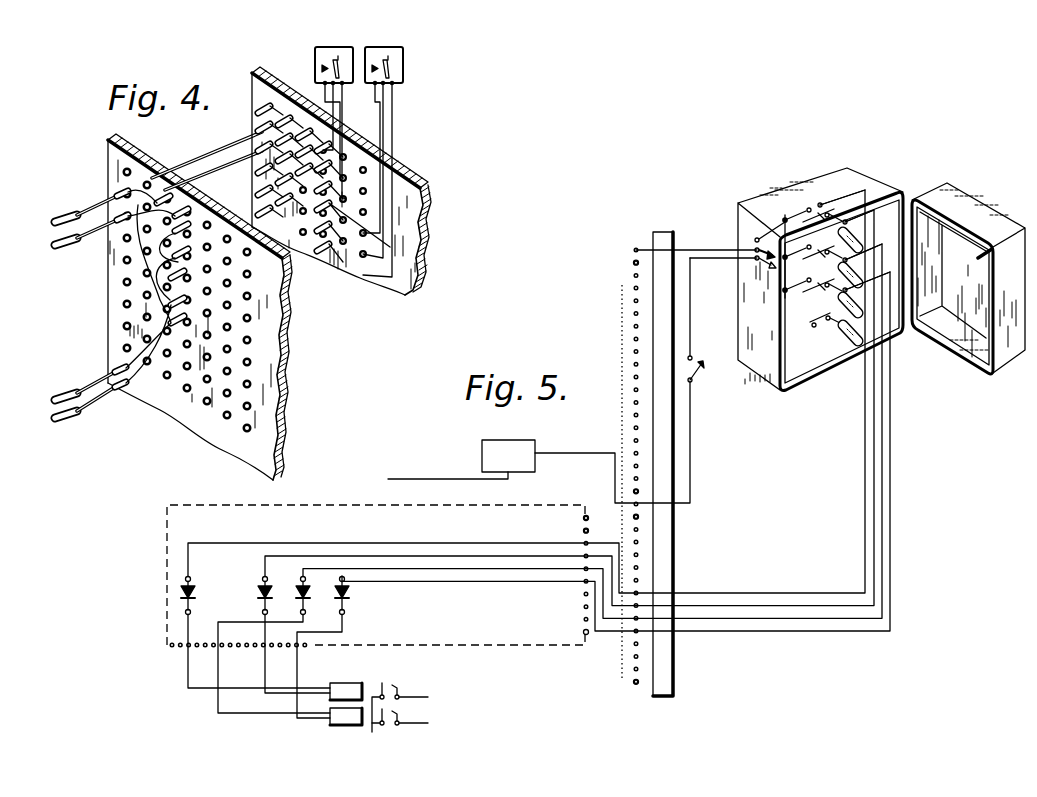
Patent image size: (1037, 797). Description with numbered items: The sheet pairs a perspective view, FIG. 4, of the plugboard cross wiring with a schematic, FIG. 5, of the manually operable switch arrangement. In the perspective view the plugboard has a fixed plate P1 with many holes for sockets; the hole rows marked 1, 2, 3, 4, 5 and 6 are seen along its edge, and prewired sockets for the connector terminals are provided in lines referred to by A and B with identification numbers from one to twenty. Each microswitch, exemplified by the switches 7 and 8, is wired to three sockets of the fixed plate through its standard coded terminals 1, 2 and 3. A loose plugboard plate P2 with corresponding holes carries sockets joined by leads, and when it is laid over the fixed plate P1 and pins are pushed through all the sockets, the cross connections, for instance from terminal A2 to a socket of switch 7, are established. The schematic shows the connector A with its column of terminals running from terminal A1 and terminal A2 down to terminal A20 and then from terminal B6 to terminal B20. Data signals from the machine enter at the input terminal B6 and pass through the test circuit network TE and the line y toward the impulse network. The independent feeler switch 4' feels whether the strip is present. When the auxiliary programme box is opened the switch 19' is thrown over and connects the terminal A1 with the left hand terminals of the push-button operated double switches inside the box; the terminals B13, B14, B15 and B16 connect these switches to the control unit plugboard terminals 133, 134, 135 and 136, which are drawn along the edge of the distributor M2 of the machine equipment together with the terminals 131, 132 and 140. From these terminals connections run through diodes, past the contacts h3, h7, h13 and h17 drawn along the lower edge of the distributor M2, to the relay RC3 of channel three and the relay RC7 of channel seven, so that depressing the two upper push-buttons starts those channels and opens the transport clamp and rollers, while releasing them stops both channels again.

In FIG. 4, the fixed plugboard plate P1 is at (415, 208).
In FIG. 4, the loose plugboard plate P2 is at (282, 346).
In FIG. 4, the standard coded terminal 1 is at (268, 103).
In FIG. 5, the standard coded terminal 1 is at (755, 249).
In FIG. 4, the standard coded terminal 2 is at (268, 123).
In FIG. 5, the standard coded terminal 2 is at (755, 259).
In FIG. 4, the standard coded terminal 3 is at (268, 143).
In FIG. 5, the standard coded terminal 3 is at (756, 238).
In FIG. 4, the socket identification number 4 is at (268, 165).
In FIG. 4, the socket identification number 5 is at (268, 187).
In FIG. 4, the socket identification number 6 is at (268, 207).
In FIG. 4, the microswitch 7 is at (334, 115).
In FIG. 4, the microswitch 8 is at (383, 154).
In FIG. 5, the socket line A is at (674, 673).
In FIG. 5, the terminal A'1 A1 is at (684, 251).
In FIG. 5, the terminal A2 is at (625, 268).
In FIG. 5, the terminal A20 is at (623, 493).
In FIG. 5, the input terminal B6 is at (625, 518).
In FIG. 5, the terminal B'13 B13 is at (750, 392).
In FIG. 5, the terminal B'14 B14 is at (755, 409).
In FIG. 5, the terminal B'15 B15 is at (759, 433).
In FIG. 5, the terminal B'16 B16 is at (763, 453).
In FIG. 5, the terminal B'20 B20 is at (623, 682).
In FIG. 5, the independent feeler switch 4' is at (625, 380).
In FIG. 5, the programme box switch 19' is at (761, 263).
In FIG. 5, the test circuit network TE is at (508, 456).
In FIG. 5, the line y is at (424, 472).
In FIG. 5, the distributor of the machine equipment M2 is at (376, 575).
In FIG. 5, the terminal 131 is at (598, 519).
In FIG. 5, the terminal 132 is at (598, 531).
In FIG. 5, the control unit plugboard terminal 133 is at (412, 565).
In FIG. 5, the control unit plugboard terminal 134 is at (450, 578).
In FIG. 5, the control unit plugboard terminal 135 is at (469, 590).
In FIG. 5, the control unit plugboard terminal 136 is at (584, 583).
In FIG. 5, the terminal 140 is at (589, 635).
In FIG. 5, the bus contact h3 is at (187, 647).
In FIG. 5, the bus contact h7 is at (218, 647).
In FIG. 5, the bus contact h13 is at (264, 647).
In FIG. 5, the bus contact h17 is at (298, 647).
In FIG. 5, the relay of channel three RC3 is at (379, 707).
In FIG. 5, the relay of channel seven RC7 is at (379, 716).